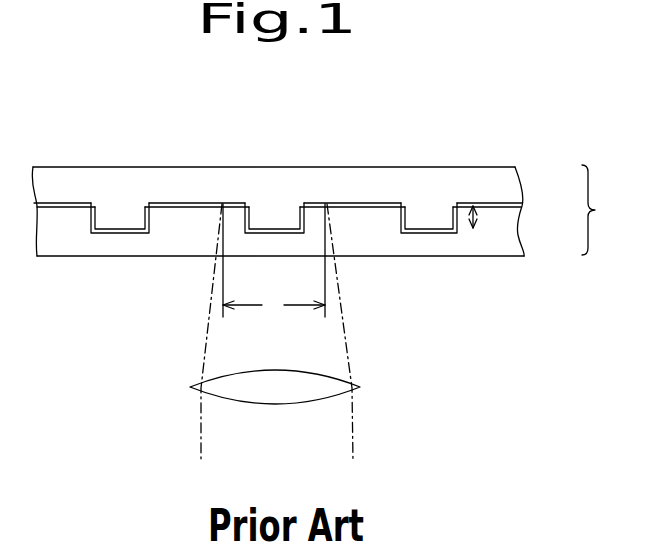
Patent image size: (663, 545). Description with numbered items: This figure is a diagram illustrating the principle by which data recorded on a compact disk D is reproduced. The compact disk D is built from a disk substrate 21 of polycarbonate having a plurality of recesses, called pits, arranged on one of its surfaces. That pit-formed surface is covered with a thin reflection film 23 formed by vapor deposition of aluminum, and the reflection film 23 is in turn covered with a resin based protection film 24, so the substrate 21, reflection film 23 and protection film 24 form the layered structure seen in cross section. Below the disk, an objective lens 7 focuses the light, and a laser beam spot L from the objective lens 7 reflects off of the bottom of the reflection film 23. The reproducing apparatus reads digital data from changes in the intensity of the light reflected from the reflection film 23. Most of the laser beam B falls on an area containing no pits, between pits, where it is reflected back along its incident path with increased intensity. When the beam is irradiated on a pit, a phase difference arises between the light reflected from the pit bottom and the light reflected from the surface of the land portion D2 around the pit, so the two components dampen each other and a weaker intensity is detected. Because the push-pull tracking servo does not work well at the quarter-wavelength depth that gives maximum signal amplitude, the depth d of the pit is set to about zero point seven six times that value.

The disk substrate 21 is at (520, 233).
The reflection film 23 is at (522, 205).
The protection film 24 is at (520, 173).
The objective lens 7 is at (211, 392).
The laser beam B is at (354, 422).
The land portion D2 is at (358, 210).
The depth of the pit d is at (477, 216).
The compact disk D is at (600, 210).
The laser beam spot L is at (274, 262).